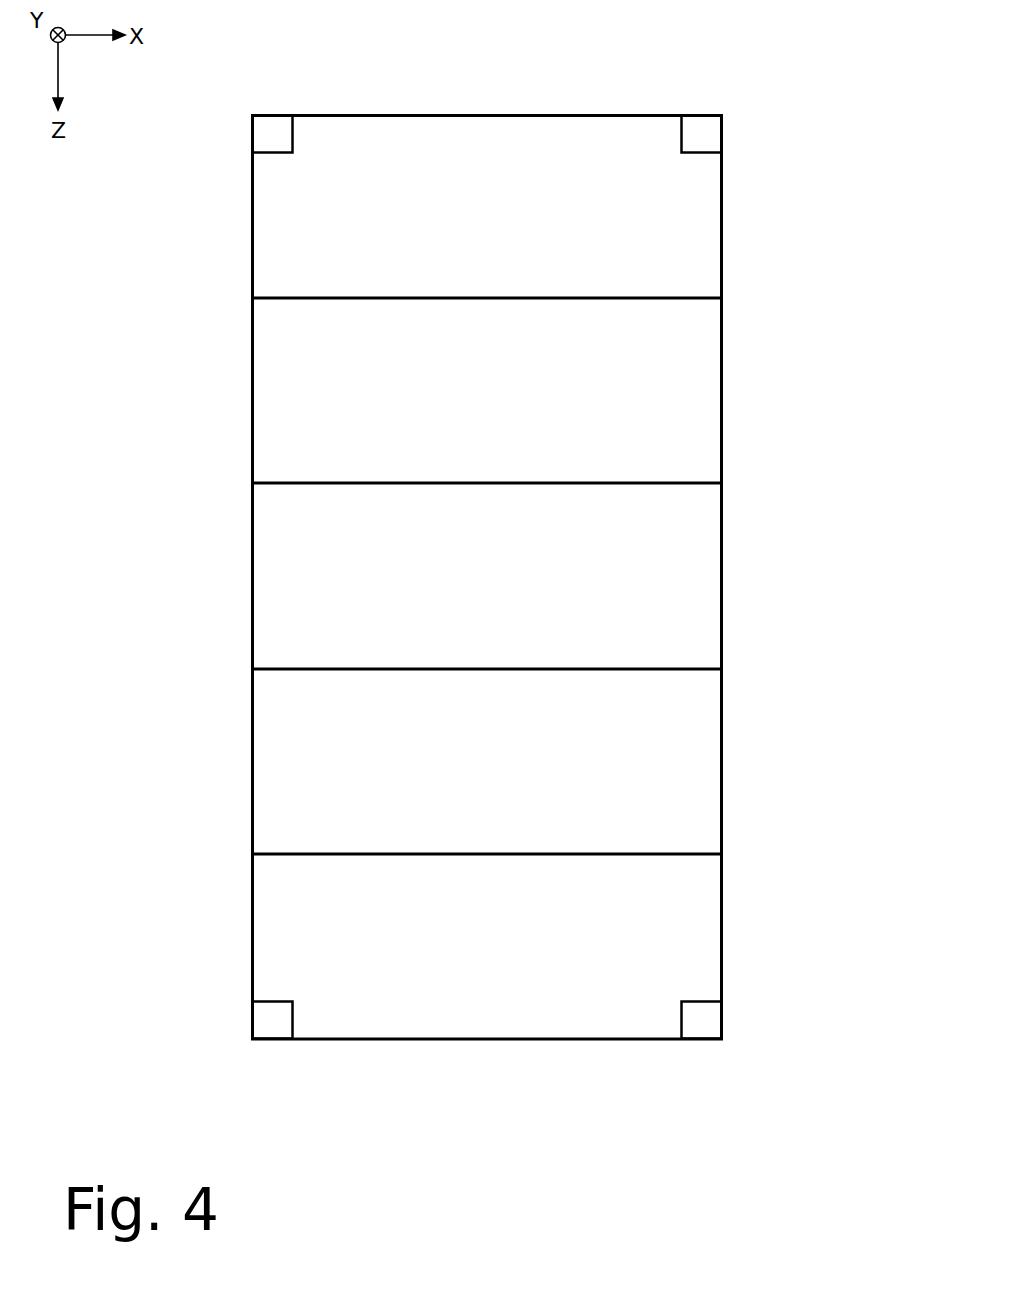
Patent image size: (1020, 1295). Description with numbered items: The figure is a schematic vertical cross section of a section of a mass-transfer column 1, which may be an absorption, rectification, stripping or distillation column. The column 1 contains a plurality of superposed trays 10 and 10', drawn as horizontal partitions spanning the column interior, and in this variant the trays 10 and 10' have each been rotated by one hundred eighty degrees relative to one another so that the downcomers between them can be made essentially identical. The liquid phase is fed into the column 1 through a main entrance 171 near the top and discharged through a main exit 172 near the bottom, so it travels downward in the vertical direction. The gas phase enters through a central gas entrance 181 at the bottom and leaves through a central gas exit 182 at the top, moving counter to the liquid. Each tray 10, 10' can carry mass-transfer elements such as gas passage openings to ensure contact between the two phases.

The mass-transfer column 1 is at (842, 74).
The tray 10 is at (447, 469).
The tray 10' is at (444, 654).
The main entrance 171 is at (702, 130).
The main exit 172 is at (272, 1020).
The central gas entrance 181 is at (702, 1020).
The central gas exit 182 is at (272, 130).